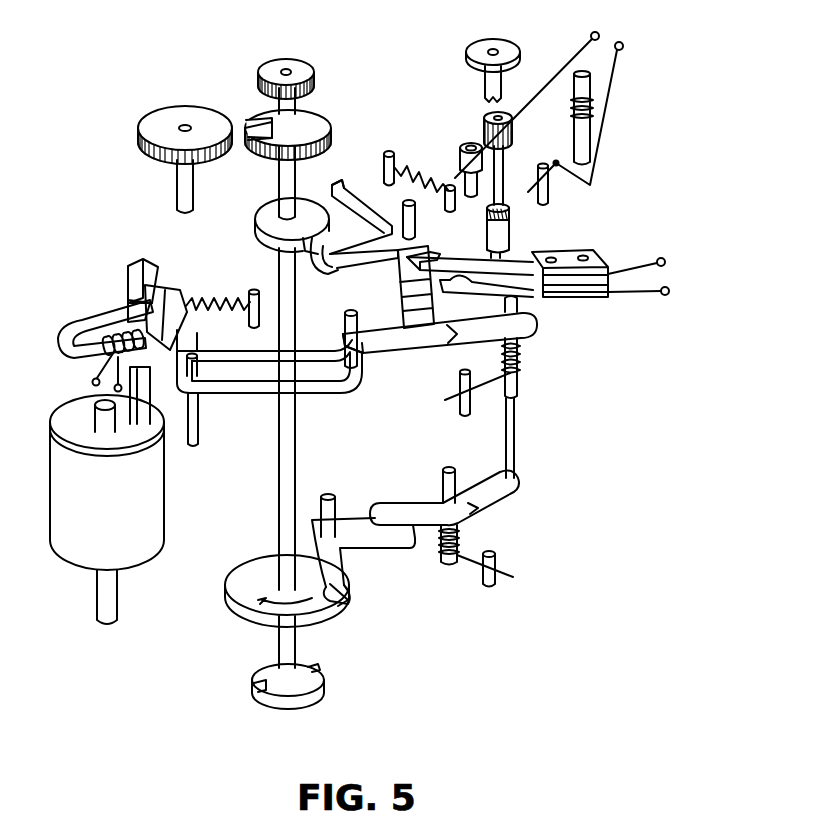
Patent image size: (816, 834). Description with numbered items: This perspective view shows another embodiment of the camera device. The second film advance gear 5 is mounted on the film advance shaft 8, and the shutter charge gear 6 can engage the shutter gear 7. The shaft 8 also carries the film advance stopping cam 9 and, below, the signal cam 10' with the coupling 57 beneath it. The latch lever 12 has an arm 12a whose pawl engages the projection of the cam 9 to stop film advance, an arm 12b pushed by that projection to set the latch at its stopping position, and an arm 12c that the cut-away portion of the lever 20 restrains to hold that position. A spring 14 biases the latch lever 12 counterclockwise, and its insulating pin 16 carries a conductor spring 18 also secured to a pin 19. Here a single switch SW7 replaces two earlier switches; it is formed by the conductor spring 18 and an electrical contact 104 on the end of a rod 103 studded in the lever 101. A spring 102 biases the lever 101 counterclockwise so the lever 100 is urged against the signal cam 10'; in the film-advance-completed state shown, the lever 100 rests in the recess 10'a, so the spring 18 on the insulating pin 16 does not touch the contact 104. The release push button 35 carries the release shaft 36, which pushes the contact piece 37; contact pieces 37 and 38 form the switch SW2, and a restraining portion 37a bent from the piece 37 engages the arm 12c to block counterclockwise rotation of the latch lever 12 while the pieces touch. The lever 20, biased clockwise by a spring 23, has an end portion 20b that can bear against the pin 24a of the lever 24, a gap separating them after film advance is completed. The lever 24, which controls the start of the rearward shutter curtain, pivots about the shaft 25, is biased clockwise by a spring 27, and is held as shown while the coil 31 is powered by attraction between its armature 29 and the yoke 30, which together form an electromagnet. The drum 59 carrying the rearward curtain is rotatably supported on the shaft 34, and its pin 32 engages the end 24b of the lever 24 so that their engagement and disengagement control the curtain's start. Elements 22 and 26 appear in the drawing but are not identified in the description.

The second film advance gear 5 is at (282, 62).
The shutter charge gear 6 is at (258, 112).
The shutter gear 7 is at (158, 127).
The film advance shaft 8 is at (278, 195).
The film advance stopping cam 9 is at (256, 228).
The latch lever 12 is at (374, 252).
The arm 12a is at (332, 272).
The arm 12b is at (337, 188).
The arm 12c is at (408, 314).
The spring 14 is at (426, 176).
The insulating pin 16 is at (465, 156).
The electrical contact 104 is at (488, 124).
The release shaft 36 is at (509, 224).
The release push button 35 is at (503, 42).
The conductor spring 18 is at (554, 110).
The pin 19 is at (548, 190).
The switch SW7 is at (566, 112).
The contact piece 37 is at (520, 262).
The restraining portion 37a is at (434, 256).
The contact piece 38 is at (530, 296).
The switch SW2 is at (664, 276).
The lever 20 is at (452, 340).
The end portion 20b is at (364, 356).
The pin 24a is at (344, 318).
The pin 22 is at (458, 410).
The spring 23 is at (518, 380).
The rod 103 is at (510, 430).
The lever 101 is at (488, 500).
The spring 102 is at (467, 560).
The lever 100 is at (342, 576).
The signal cam 10' is at (267, 592).
The recess 10'a is at (359, 610).
The coupling 57 is at (252, 677).
The drum 59 is at (160, 522).
The shaft 34 is at (110, 600).
The lever 24 is at (246, 393).
The shaft 25 is at (195, 448).
The end of lever 24b is at (158, 268).
The pin 32 is at (130, 287).
The armature 29 is at (188, 322).
The spring 27 is at (206, 300).
The pin 26 is at (254, 290).
The yoke 30 is at (86, 324).
The coil 31 is at (110, 355).